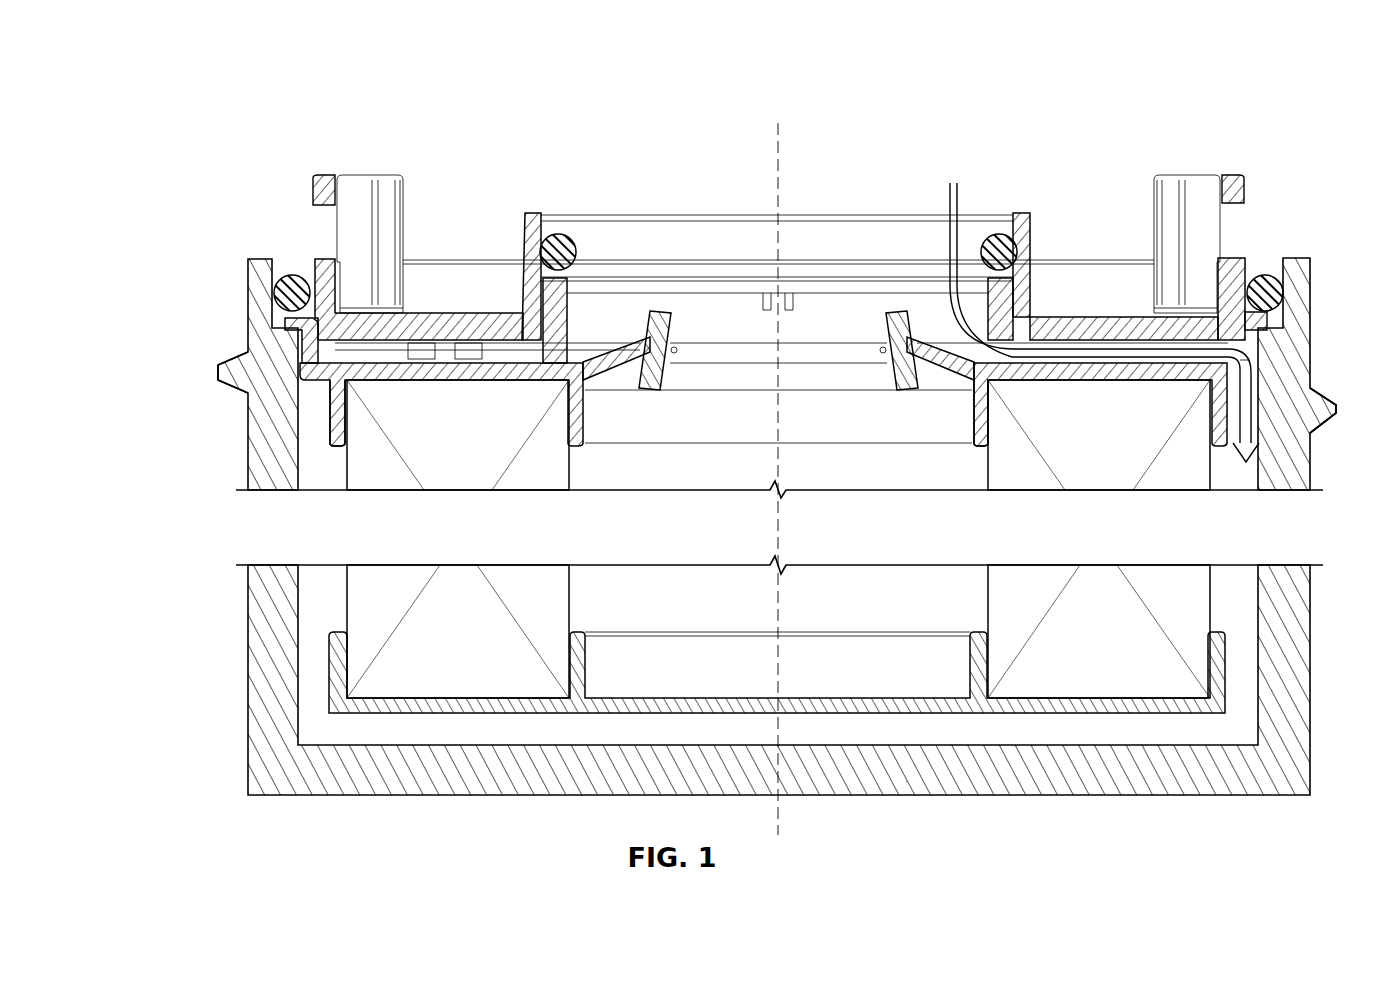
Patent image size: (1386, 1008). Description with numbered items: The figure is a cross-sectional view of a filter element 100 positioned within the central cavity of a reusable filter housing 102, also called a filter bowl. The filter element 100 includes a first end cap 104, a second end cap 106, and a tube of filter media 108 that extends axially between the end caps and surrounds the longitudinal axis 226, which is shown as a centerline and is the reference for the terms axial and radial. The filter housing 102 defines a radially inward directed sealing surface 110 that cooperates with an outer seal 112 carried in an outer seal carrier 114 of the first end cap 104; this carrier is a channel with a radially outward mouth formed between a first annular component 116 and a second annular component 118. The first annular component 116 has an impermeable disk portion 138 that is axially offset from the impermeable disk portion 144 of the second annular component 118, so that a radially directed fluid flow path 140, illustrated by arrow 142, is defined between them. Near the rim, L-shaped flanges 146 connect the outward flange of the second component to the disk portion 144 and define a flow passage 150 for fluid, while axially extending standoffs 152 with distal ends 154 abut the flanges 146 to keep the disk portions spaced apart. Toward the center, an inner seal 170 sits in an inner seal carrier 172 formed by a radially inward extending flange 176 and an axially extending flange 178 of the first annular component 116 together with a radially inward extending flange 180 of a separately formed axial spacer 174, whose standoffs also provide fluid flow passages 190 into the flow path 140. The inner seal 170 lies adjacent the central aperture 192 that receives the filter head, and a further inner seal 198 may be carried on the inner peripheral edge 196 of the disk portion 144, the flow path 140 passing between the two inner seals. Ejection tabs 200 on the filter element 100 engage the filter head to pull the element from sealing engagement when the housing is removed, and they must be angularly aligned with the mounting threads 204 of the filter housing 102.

The filter element 100 is at (466, 150).
The filter housing 102 is at (749, 489).
The first end cap 104 is at (1119, 233).
The second end cap 106 is at (338, 676).
The filter media 108 is at (345, 604).
The radially inward directed sealing surface 110 is at (1290, 258).
The outer seal 112 is at (1256, 274).
The outer seal carrier 114 is at (1268, 320).
The first annular component 116 is at (1137, 326).
The second annular component 118 is at (948, 315).
The impermeable disk portion 138 is at (1085, 326).
The radially directed fluid flow path 140 is at (1178, 322).
The arrow 142 is at (950, 183).
The impermeable disk portion 144 is at (1100, 447).
The flanges 146 is at (753, 390).
The flow passage 150 is at (1262, 366).
The axially extending standoffs 152 is at (362, 409).
The distal ends 154 is at (325, 381).
The inner seal 170 is at (577, 245).
The inner seal carrier 172 is at (586, 248).
The axial spacer 174 is at (562, 305).
The radially inward extending flange 176 is at (543, 232).
The axially extending flange 178 is at (530, 247).
The radially inward extending flange 180 is at (695, 287).
The fluid flow passages 190 is at (1017, 378).
The central aperture 192 is at (816, 198).
The inner peripheral edge 196 is at (678, 350).
The inner seal 198 is at (655, 390).
The ejection tabs 200 is at (318, 186).
The mounting threads 204 is at (218, 372).
The longitudinal axis 226 is at (779, 147).